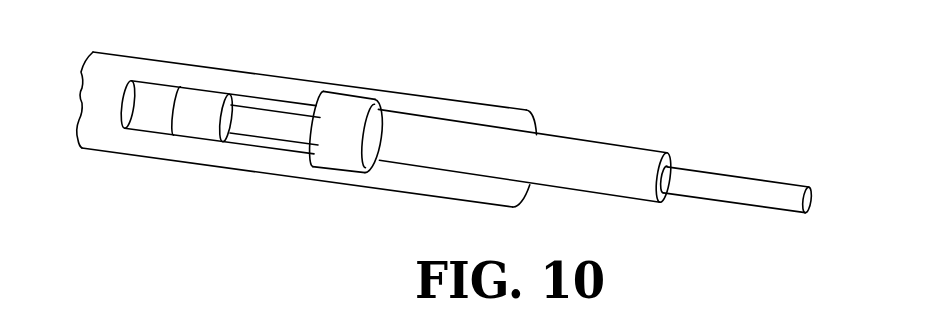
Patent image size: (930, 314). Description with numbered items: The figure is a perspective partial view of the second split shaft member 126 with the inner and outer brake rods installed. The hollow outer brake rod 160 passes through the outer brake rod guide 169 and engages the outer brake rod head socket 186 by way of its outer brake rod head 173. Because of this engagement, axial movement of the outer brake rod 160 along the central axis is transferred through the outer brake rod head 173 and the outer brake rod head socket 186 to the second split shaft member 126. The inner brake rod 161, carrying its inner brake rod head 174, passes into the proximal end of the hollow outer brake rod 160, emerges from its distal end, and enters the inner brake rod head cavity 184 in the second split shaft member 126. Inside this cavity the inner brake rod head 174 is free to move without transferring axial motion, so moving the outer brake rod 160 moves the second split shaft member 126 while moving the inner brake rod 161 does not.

The second split shaft member 126 is at (152, 142).
The inner brake rod head cavity 184 is at (165, 95).
The inner brake rod head 174 is at (203, 125).
The inner brake rod 161 is at (280, 123).
The outer brake rod head socket 186 is at (325, 95).
The outer brake rod head 173 is at (345, 160).
The outer brake rod guide 169 is at (459, 118).
The outer brake rod 160 is at (592, 177).